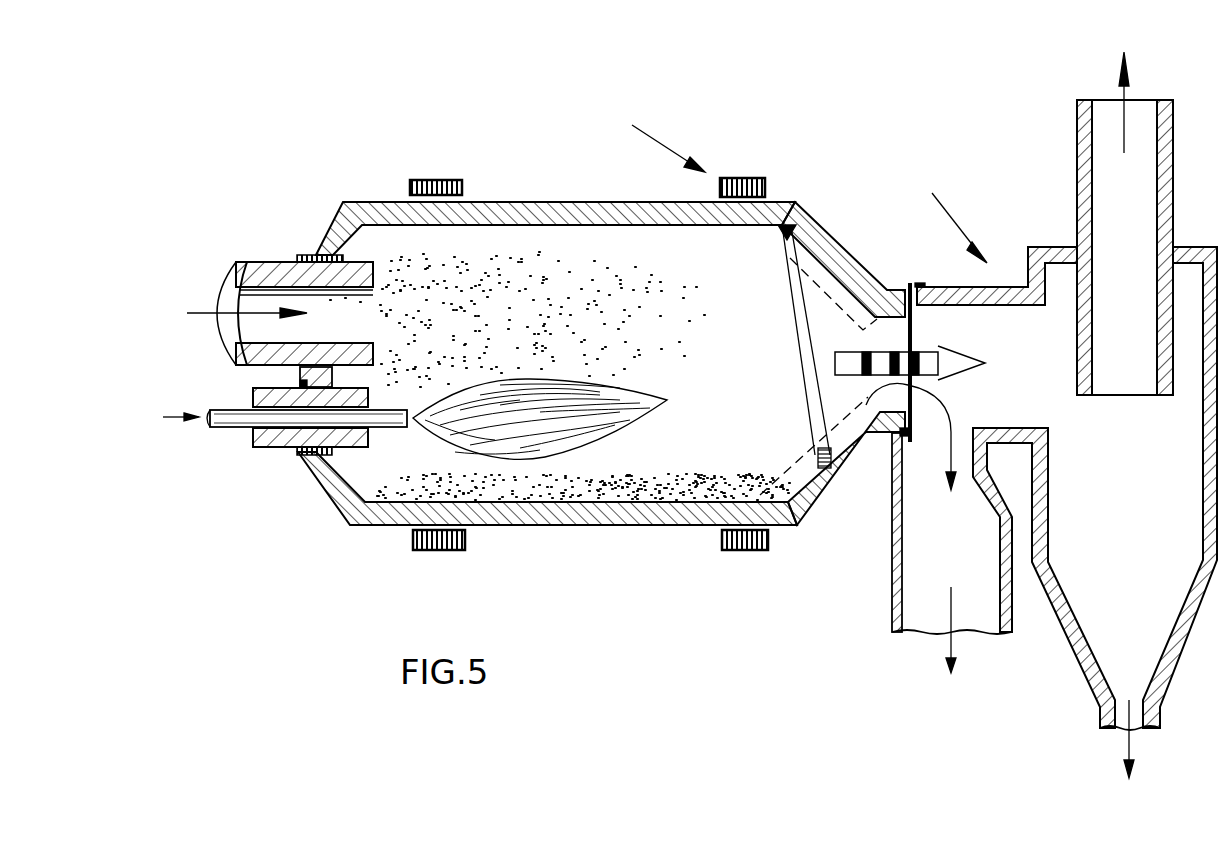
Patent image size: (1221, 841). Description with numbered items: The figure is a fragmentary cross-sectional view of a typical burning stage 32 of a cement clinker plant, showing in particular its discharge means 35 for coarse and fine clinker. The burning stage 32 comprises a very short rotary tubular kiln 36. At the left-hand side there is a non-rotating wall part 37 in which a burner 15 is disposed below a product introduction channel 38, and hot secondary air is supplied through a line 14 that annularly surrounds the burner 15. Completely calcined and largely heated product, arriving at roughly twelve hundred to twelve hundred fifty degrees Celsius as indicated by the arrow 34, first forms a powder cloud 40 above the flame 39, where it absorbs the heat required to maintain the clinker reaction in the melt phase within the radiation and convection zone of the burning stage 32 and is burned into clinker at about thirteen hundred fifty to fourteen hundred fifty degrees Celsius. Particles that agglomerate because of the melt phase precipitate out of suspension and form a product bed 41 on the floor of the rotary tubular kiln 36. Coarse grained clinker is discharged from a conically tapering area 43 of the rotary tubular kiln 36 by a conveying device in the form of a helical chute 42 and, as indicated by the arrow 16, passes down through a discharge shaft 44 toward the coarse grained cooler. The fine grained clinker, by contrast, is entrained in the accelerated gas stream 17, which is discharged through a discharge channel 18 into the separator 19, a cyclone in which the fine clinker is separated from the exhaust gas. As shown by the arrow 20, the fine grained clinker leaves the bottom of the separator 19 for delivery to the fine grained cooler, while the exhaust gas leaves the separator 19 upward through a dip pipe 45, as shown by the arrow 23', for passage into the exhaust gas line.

The line 14 is at (263, 449).
The burner 15 is at (293, 445).
The arrow 16 is at (950, 430).
The accelerated gas stream 17 is at (953, 363).
The discharge channel 18 is at (1040, 399).
The separator 19 is at (1137, 504).
The arrow 20 is at (1133, 748).
The arrow 23' is at (1161, 102).
The burning stage 32 is at (645, 138).
The arrow 34 is at (198, 312).
The discharge means 35 is at (943, 200).
The rotary tubular kiln 36 is at (505, 213).
The non-rotating wall part 37 is at (335, 382).
The product introduction channel 38 is at (268, 296).
The flame 39 is at (565, 417).
The powder cloud 40 is at (490, 333).
The product bed 41 is at (730, 500).
The helical chute 42 is at (812, 400).
The conically tapering area 43 is at (827, 248).
The discharge shaft 44 is at (918, 593).
The dip pipe 45 is at (1140, 209).